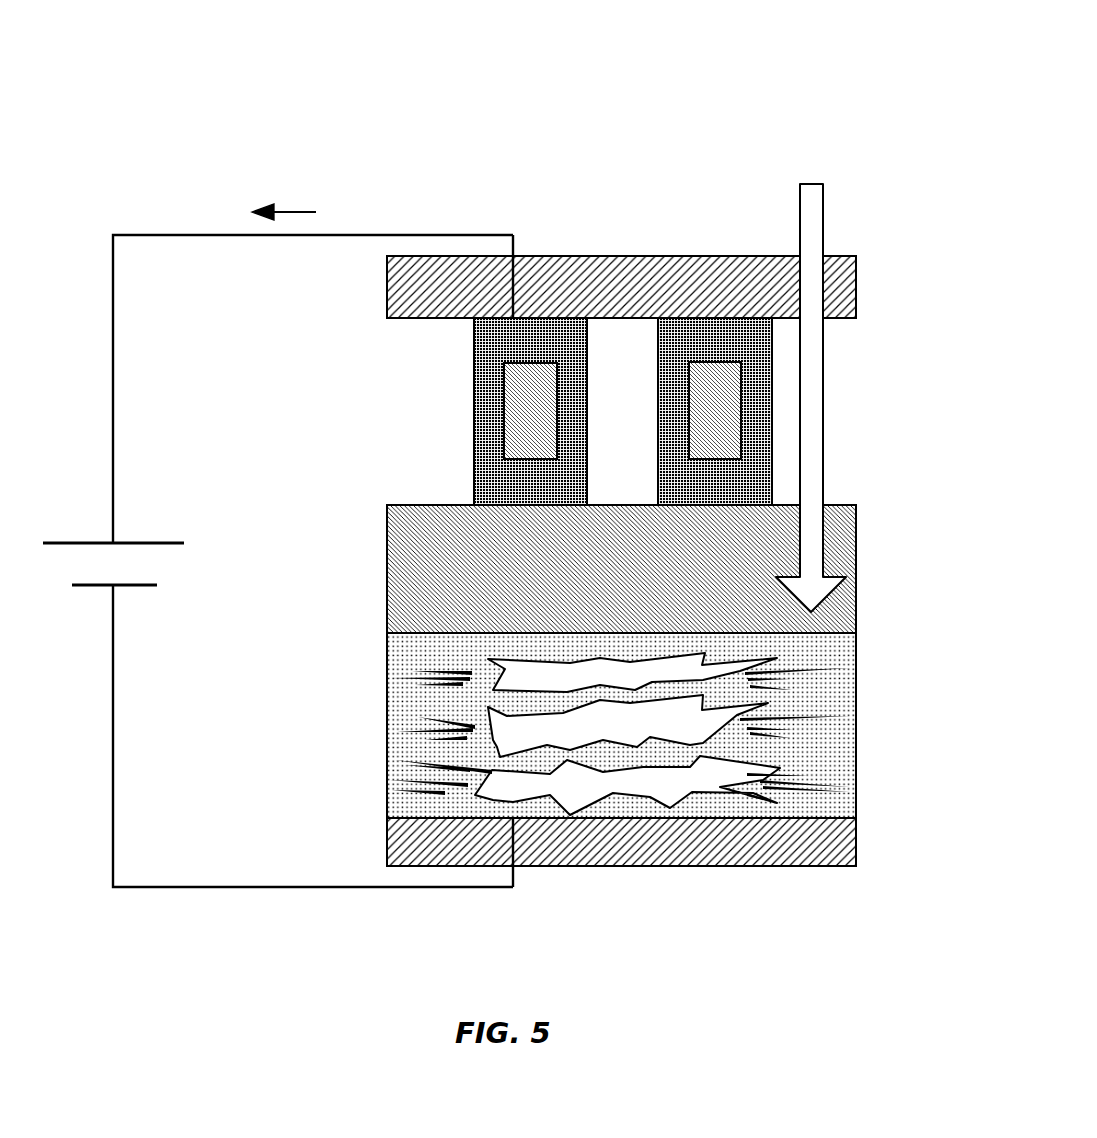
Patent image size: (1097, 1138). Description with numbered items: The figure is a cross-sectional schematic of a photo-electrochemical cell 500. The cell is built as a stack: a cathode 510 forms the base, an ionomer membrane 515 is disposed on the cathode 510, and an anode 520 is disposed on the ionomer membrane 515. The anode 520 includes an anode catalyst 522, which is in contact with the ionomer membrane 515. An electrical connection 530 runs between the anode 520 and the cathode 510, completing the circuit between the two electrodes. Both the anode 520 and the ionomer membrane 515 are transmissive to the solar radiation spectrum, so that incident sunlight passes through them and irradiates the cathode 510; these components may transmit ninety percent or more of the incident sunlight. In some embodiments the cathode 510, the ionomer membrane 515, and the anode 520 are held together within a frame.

The photo-electrochemical cell 500 is at (501, 455).
The cathode 510 is at (835, 690).
The ionomer membrane 515 is at (832, 548).
The anode 520 is at (710, 380).
The anode catalyst 522 is at (747, 427).
The electrical connection 530 is at (367, 235).